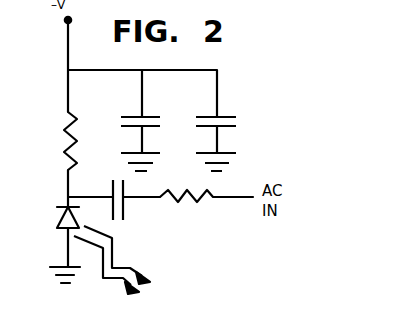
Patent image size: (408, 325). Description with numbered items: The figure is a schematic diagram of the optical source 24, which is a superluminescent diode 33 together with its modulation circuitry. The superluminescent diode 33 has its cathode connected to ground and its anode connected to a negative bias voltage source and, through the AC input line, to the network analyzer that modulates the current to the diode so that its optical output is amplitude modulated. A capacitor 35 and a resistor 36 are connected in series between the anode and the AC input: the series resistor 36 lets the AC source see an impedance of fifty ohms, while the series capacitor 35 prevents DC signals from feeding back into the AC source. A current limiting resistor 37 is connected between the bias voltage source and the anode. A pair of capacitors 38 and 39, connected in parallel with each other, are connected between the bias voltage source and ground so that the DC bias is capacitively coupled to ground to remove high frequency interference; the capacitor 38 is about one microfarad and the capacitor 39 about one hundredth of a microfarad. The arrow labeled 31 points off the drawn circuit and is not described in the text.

The optical source 24 is at (292, 119).
The housing 31 is at (386, 294).
The superluminescent diode 33 is at (178, 277).
The capacitor 35 is at (127, 207).
The resistor 36 is at (196, 198).
The current limiting resistor 37 is at (75, 142).
The capacitor 38 is at (148, 117).
The capacitor 39 is at (223, 117).